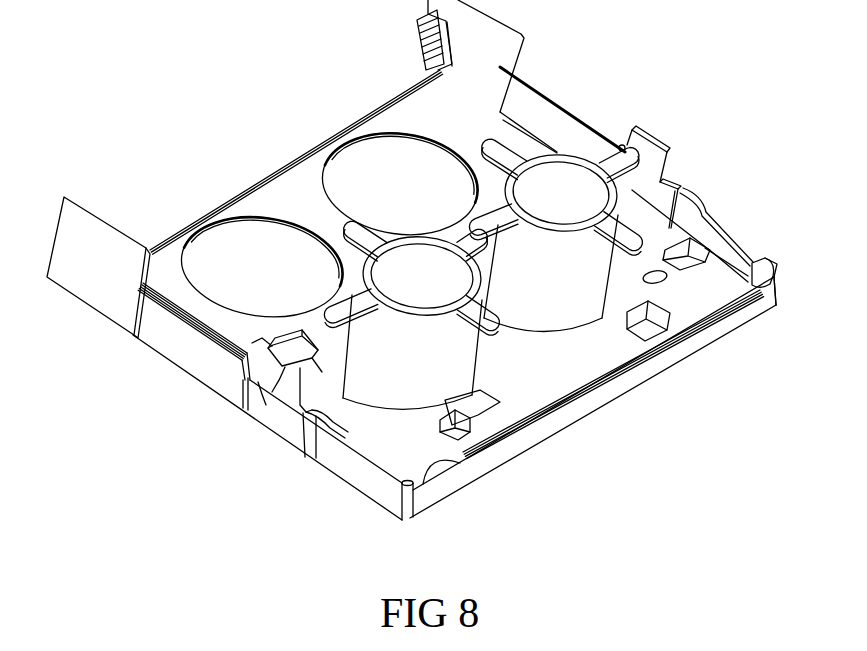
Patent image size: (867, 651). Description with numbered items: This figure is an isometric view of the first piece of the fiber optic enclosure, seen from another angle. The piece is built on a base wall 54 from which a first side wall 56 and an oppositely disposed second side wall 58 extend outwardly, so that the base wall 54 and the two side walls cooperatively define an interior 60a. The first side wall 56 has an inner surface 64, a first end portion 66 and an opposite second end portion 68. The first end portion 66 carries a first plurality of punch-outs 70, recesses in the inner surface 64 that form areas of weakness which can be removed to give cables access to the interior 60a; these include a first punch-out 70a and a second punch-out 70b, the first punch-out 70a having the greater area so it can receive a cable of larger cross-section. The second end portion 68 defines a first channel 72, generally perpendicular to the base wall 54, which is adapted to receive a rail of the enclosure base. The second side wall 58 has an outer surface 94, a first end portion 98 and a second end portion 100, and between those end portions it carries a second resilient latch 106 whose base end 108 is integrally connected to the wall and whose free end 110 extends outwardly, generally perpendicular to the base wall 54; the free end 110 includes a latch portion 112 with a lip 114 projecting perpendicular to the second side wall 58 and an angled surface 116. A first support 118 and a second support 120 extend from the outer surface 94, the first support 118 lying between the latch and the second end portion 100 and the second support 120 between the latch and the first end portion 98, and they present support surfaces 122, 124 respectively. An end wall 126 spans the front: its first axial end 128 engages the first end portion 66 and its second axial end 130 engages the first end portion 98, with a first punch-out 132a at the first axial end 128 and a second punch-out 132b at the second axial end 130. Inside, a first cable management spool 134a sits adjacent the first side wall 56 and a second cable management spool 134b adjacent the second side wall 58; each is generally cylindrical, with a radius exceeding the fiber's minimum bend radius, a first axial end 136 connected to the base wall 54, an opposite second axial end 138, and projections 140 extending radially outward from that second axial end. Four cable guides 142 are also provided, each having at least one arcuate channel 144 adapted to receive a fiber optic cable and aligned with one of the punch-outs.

The base wall 54 is at (290, 200).
The first side wall 56 is at (584, 102).
The second side wall 58 is at (210, 372).
The interior 60a is at (555, 369).
The inner surface 64 is at (528, 126).
The first end portion 66 is at (750, 254).
The second end portion 68 is at (462, 63).
The first plurality of punch-outs 70 is at (749, 236).
The first punch-out 70a is at (748, 278).
The second punch-out 70b is at (726, 224).
The first channel 72 is at (419, 48).
The outer surface 94 is at (172, 354).
The first end portion 98 is at (372, 488).
The second end portion 100 is at (78, 279).
The second resilient latch 106 is at (292, 330).
The base end 108 is at (287, 378).
The free end 110 is at (303, 368).
The latch portion 112 is at (266, 336).
The lip 114 is at (298, 381).
The angled surface 116 is at (290, 357).
The first support 118 is at (226, 395).
The second support 120 is at (308, 458).
The support surface 122 is at (194, 324).
The support surface 124 is at (313, 412).
The end wall 126 is at (556, 428).
The first axial end 128 is at (747, 313).
The second axial end 130 is at (432, 502).
The first punch-out 132a is at (779, 271).
The second punch-out 132b is at (466, 482).
The first cable management spool 134a is at (617, 281).
The second cable management spool 134b is at (482, 349).
The first axial end 136 is at (655, 348).
The second axial end 138 is at (557, 243).
The projections 140 is at (503, 148).
The cable guides 142 is at (432, 438).
The channel 144 is at (465, 407).